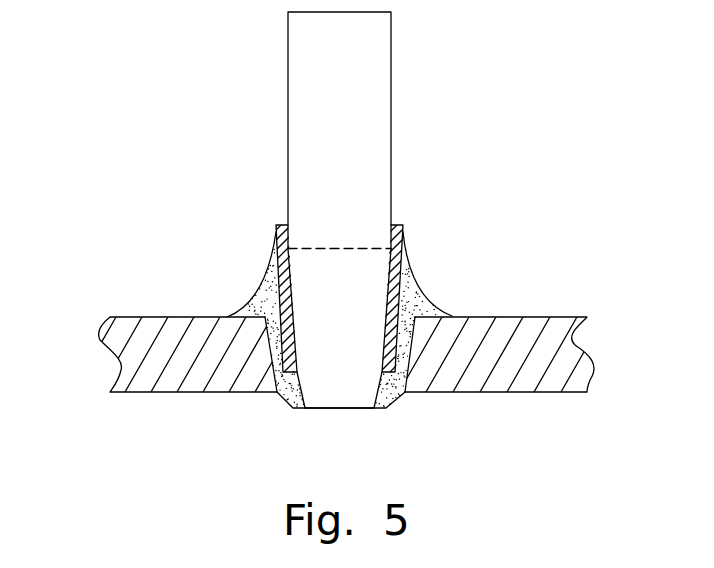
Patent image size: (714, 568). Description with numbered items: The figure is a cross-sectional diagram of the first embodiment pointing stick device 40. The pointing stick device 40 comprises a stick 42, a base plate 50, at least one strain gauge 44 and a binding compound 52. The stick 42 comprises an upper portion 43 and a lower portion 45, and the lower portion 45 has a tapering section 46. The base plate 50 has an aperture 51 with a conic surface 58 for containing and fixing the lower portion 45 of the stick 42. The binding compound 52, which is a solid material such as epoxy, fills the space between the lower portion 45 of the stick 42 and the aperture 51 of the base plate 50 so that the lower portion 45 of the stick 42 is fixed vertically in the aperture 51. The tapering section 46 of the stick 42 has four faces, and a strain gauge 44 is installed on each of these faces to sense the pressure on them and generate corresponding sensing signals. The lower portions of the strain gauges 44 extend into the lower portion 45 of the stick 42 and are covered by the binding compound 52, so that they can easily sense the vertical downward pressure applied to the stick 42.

The pointing stick device 40 is at (147, 36).
The stick 42 is at (392, 50).
The upper portion 43 is at (365, 154).
The strain gauge 44 is at (404, 226).
The lower portion 45 is at (363, 344).
The tapering section 46 is at (300, 306).
The base plate 50 is at (495, 335).
The aperture 51 is at (264, 308).
The binding compound 52 is at (416, 295).
The conic surface 58 is at (422, 375).